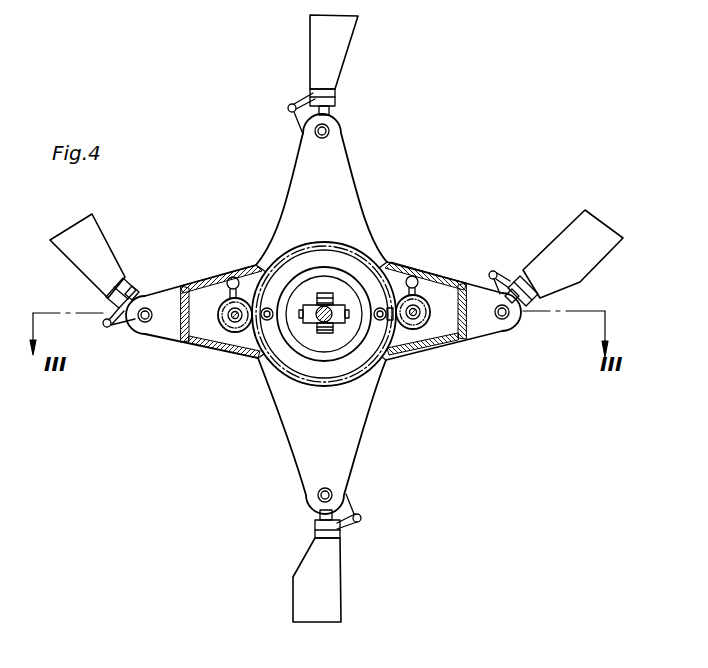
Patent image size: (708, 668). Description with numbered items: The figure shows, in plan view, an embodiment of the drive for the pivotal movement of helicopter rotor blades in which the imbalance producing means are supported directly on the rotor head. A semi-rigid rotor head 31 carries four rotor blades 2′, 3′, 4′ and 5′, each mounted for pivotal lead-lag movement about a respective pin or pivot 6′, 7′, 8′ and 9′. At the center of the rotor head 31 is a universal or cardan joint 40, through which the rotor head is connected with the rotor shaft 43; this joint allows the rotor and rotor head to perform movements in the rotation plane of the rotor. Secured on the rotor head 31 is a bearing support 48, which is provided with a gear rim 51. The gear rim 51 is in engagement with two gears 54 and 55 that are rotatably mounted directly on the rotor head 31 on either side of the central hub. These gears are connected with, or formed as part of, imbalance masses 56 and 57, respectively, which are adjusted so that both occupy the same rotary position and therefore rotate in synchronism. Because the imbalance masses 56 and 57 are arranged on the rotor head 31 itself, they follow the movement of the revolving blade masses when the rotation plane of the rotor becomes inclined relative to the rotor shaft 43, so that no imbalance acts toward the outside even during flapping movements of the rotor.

The rotor blade 2′ is at (347, 53).
The rotor blade 3′ is at (597, 236).
The rotor blade 4′ is at (330, 612).
The rotor blade 5′ is at (78, 247).
The pin or pivot 6′ is at (340, 130).
The pin or pivot 7′ is at (505, 318).
The pin or pivot 8′ is at (318, 497).
The pin or pivot 9′ is at (146, 323).
The semi-rigid rotor head 31 is at (352, 185).
The universal or cardan joint 40 is at (308, 312).
The rotor shaft 43 is at (331, 306).
The bearing support 48 is at (307, 363).
The gear rim 51 is at (305, 245).
The gear 54 is at (228, 332).
The gear 55 is at (427, 302).
The imbalance mass 56 is at (232, 277).
The imbalance mass 57 is at (414, 277).